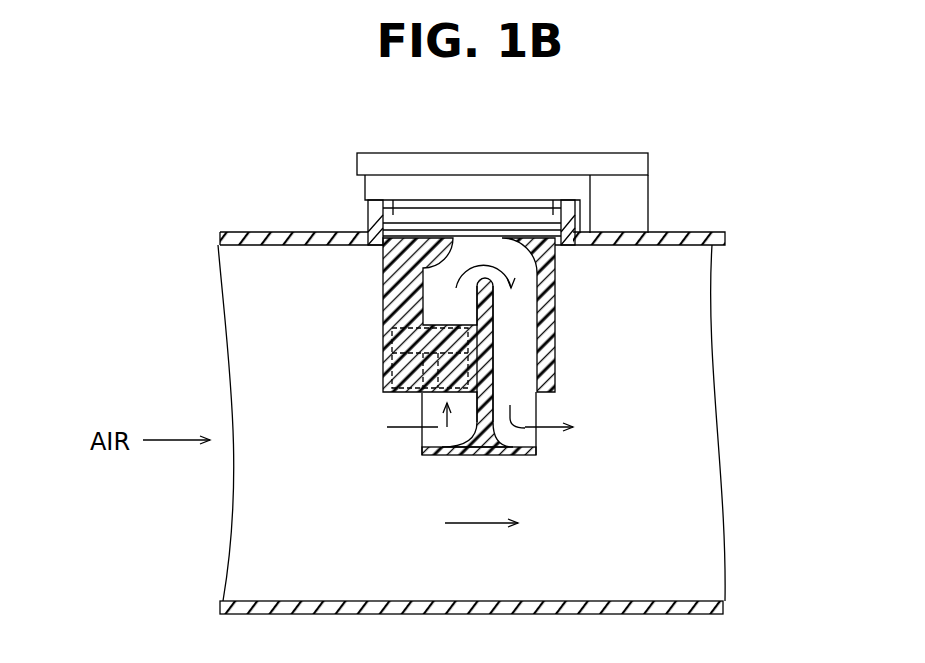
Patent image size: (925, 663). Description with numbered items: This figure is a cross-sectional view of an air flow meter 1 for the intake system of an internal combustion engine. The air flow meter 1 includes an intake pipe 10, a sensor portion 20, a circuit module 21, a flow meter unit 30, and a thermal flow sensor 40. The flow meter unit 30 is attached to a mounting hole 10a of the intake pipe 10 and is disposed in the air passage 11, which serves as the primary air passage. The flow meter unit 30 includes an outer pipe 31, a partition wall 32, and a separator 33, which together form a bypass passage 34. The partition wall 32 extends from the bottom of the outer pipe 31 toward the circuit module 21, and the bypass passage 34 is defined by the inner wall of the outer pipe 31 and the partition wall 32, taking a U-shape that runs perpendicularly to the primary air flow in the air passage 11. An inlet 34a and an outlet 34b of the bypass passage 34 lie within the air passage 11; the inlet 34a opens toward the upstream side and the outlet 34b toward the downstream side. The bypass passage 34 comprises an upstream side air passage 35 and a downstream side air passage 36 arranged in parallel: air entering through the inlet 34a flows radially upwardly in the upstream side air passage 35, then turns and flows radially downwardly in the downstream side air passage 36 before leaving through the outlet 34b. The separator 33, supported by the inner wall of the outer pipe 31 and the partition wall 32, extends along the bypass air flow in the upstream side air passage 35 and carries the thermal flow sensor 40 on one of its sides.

The air flow meter 1 is at (265, 225).
The intake pipe 10 is at (700, 233).
The mounting hole 10a is at (393, 212).
The air passage 11 is at (682, 297).
The sensor portion 20 is at (520, 150).
The circuit module 21 is at (583, 150).
The flow meter unit 30 is at (557, 316).
The outer pipe 31 is at (382, 284).
The partition wall 32 is at (500, 393).
The separator 33 is at (465, 400).
The bypass passage 34 is at (515, 265).
The inlet 34a is at (422, 417).
The outlet 34b is at (536, 438).
The upstream side air passage 35 is at (438, 403).
The downstream side air passage 36 is at (513, 342).
The thermal flow sensor 40 is at (382, 352).